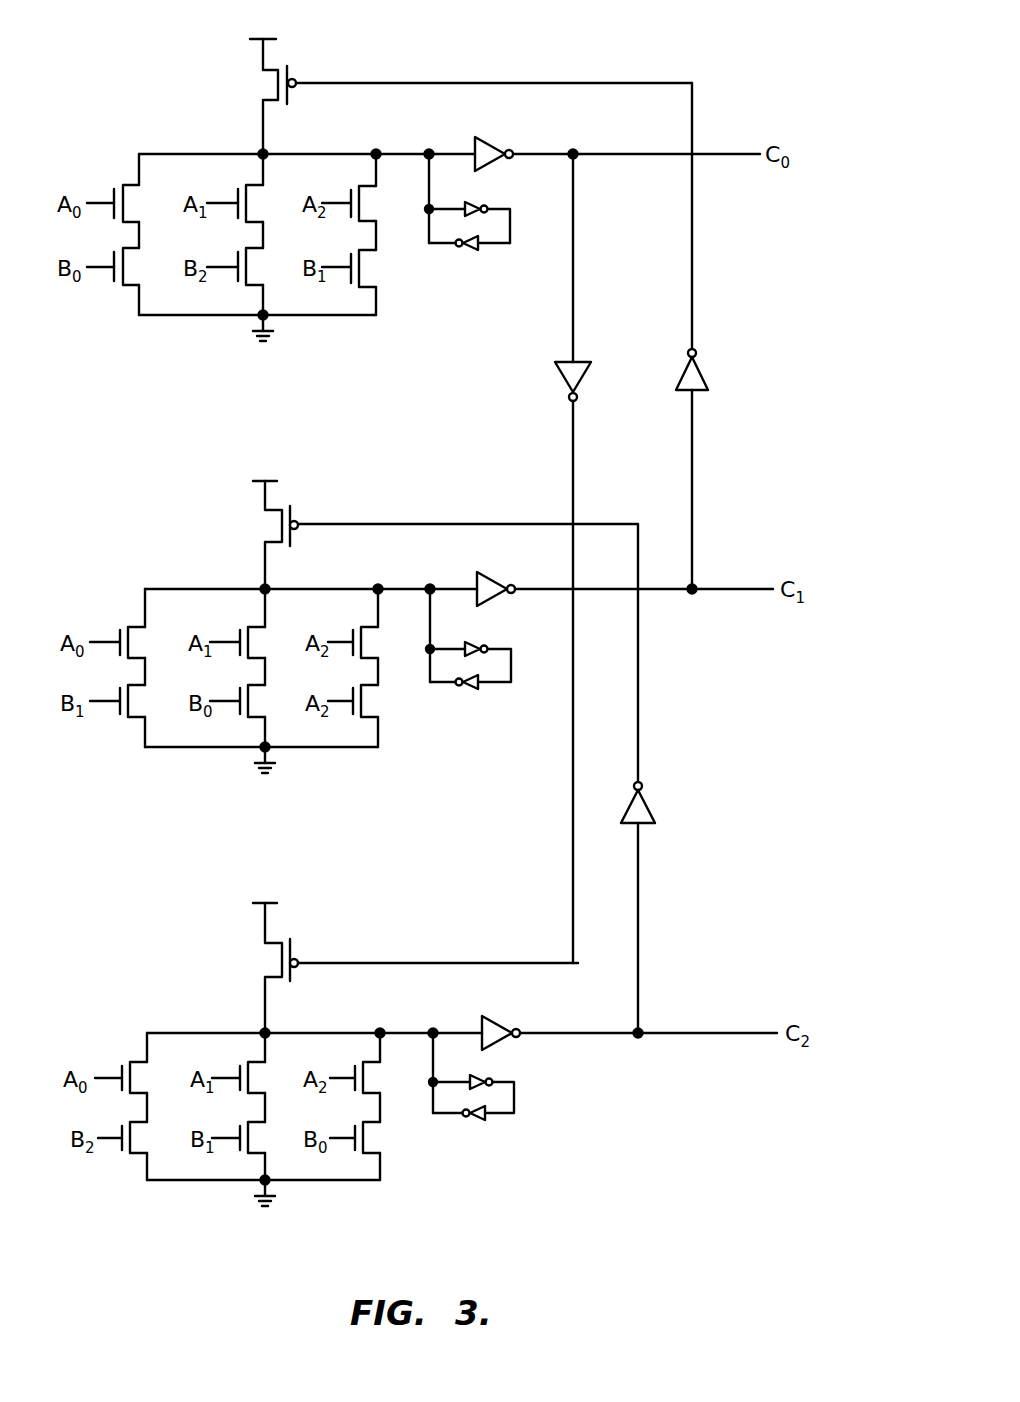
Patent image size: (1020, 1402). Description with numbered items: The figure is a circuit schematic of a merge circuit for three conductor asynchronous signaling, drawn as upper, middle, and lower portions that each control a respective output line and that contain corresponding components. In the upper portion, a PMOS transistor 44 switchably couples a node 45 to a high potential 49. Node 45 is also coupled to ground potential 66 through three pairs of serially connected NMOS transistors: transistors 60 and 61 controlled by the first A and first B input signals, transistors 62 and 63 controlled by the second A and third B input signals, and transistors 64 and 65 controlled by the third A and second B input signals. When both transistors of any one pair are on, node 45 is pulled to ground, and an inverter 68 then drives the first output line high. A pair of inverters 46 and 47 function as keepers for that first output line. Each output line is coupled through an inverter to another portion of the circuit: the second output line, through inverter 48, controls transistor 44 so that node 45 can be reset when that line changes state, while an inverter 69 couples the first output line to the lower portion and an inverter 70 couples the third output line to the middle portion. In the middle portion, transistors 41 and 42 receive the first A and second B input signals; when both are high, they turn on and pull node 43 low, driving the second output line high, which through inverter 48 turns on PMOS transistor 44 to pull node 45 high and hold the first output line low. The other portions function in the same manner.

The transistor 41 is at (140, 645).
The transistor 42 is at (140, 705).
The node 43 is at (268, 587).
The PMOS transistor 44 is at (289, 76).
The node 45 is at (265, 152).
The inverter 46 is at (478, 206).
The inverter 47 is at (470, 250).
The inverter 48 is at (706, 382).
The high potential 49 is at (270, 38).
The transistor 60 is at (133, 206).
The transistor 61 is at (133, 271).
The transistor 62 is at (257, 208).
The transistor 63 is at (257, 273).
The transistor 64 is at (371, 207).
The transistor 65 is at (371, 275).
The ground potential 66 is at (272, 335).
The inverter 68 is at (498, 144).
The inverter 69 is at (586, 383).
The inverter 70 is at (650, 806).